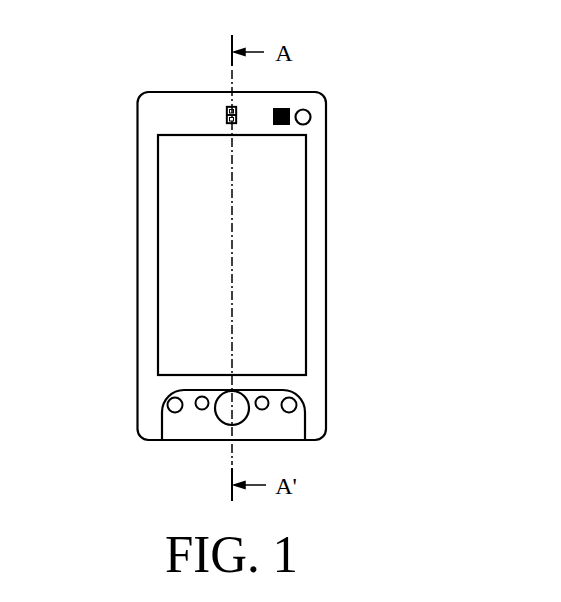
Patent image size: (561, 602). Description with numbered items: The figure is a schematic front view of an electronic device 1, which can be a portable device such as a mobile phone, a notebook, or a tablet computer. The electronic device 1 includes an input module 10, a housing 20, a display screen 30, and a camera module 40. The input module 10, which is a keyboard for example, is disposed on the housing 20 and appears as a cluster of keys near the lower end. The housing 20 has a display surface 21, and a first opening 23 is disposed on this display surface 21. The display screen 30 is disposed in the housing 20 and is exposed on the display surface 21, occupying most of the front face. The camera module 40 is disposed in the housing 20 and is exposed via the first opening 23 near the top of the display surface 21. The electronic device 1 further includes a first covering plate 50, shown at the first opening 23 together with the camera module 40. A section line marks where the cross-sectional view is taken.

The electronic device 1 is at (380, 59).
The input module 10 is at (251, 424).
The housing 20 is at (333, 151).
The display surface 21 is at (317, 265).
The first opening 23 is at (227, 112).
The display screen 30 is at (311, 198).
The camera module 40 is at (228, 106).
The first covering plate 50 is at (226, 118).